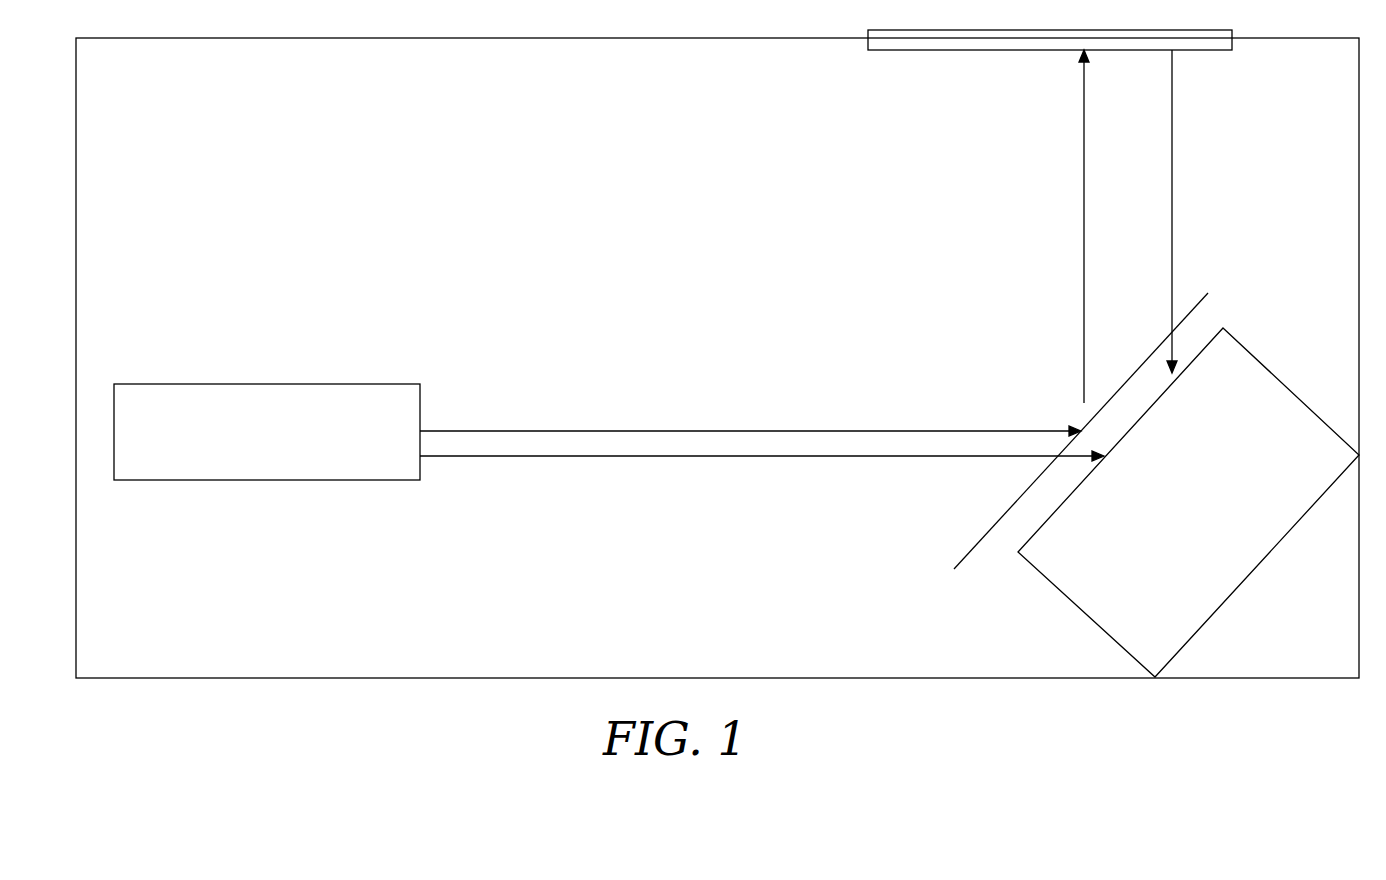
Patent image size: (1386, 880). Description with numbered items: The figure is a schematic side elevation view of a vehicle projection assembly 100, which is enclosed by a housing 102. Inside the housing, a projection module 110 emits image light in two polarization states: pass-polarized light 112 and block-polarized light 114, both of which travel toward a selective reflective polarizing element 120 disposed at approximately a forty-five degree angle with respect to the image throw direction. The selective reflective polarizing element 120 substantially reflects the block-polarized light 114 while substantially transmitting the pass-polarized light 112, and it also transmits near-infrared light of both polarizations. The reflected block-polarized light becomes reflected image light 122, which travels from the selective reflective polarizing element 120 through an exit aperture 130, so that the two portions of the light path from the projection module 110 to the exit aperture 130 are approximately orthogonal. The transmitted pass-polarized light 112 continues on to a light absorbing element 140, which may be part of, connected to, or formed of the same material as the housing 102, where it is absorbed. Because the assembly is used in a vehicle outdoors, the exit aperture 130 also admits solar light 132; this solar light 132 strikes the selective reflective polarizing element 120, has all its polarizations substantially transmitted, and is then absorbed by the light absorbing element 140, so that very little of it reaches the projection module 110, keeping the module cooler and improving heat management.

The vehicle projection assembly 100 is at (207, 696).
The housing 102 is at (240, 39).
The projection module 110 is at (303, 456).
The pass-polarized light 112 is at (499, 458).
The block-polarized light 114 is at (569, 430).
The selective reflective polarizing element 120 is at (1000, 517).
The reflected image light 122 is at (1084, 292).
The exit aperture 130 is at (934, 38).
The solar light 132 is at (1173, 222).
The light absorbing element 140 is at (1212, 503).